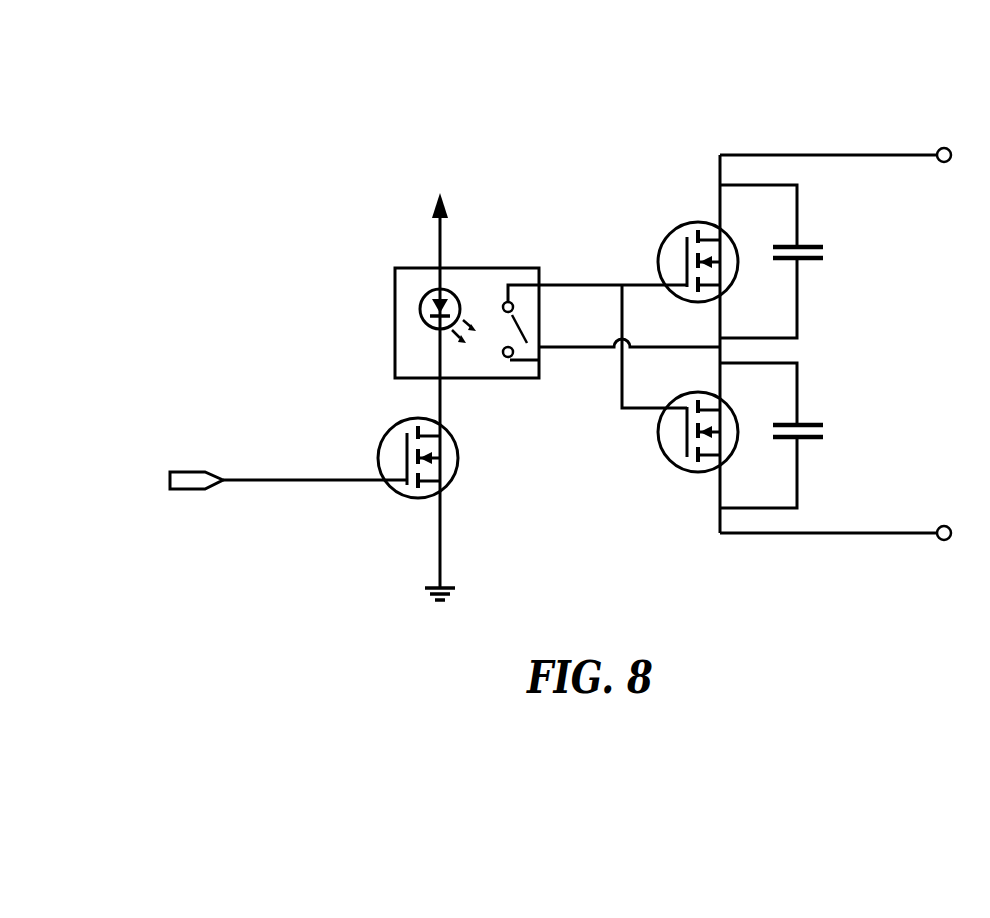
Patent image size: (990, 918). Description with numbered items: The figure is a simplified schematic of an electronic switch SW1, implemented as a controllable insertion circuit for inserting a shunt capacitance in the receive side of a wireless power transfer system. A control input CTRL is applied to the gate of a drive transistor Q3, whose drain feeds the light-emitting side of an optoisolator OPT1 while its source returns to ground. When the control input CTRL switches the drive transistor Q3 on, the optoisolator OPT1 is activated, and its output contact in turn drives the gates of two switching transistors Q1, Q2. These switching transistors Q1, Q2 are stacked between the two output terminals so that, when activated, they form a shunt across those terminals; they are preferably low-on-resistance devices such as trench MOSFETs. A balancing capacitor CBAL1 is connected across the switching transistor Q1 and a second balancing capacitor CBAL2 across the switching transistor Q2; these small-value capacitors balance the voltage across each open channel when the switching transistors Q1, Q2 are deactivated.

The switch SW1 is at (290, 93).
The optoisolator OPT1 is at (467, 340).
The switching transistor Q1 is at (696, 243).
The switching transistor Q2 is at (696, 451).
The drive transistor Q3 is at (434, 509).
The control input CTRL is at (281, 504).
The balancing capacitor CBAL1 is at (809, 261).
The balancing capacitor CBAL2 is at (809, 435).